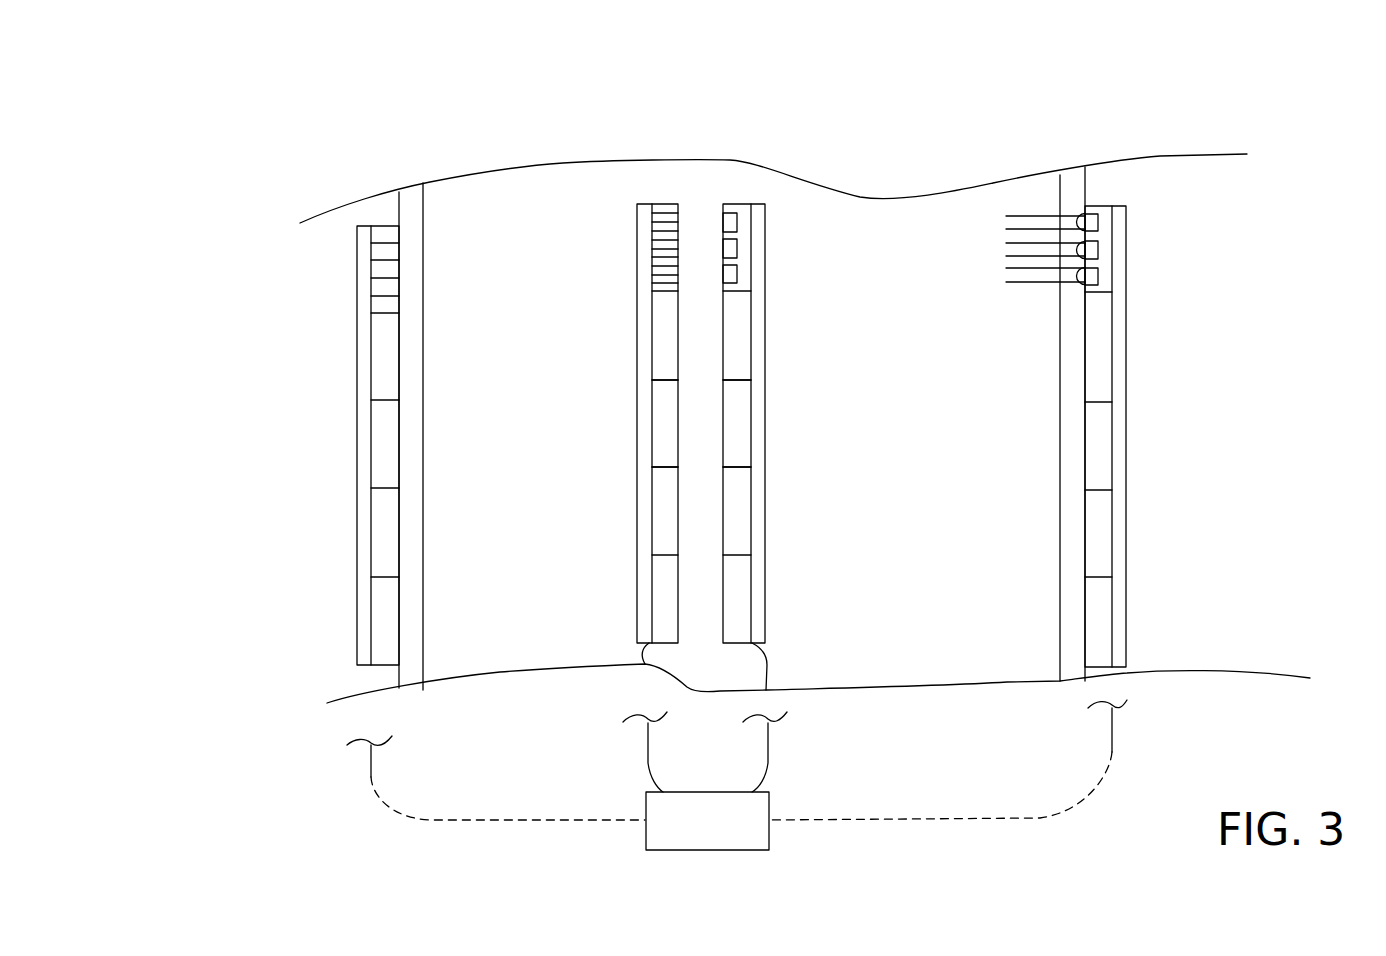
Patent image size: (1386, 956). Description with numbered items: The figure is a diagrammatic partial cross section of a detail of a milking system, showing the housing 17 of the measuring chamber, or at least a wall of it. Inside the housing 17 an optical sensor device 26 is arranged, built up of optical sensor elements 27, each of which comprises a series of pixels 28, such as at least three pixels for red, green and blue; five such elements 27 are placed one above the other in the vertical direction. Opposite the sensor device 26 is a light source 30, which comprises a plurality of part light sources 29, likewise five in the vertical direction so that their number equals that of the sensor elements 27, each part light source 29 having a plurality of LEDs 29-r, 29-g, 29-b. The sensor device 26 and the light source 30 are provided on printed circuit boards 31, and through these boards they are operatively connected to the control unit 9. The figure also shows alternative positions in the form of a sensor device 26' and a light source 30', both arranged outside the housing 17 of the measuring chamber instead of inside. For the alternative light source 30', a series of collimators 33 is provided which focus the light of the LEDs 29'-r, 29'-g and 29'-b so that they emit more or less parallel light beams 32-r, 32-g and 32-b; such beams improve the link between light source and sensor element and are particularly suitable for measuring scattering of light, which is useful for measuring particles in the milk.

The control unit 9 is at (701, 820).
The housing of the measuring chamber 17 is at (408, 218).
The optical sensor device 26 is at (575, 423).
The sensor device 26' is at (288, 445).
The optical sensor elements 27 is at (751, 254).
The pixels 28 is at (663, 213).
The part light sources 29 is at (859, 255).
The red LED 29-r is at (729, 222).
The green LED 29-g is at (729, 249).
The blue LED 29-b is at (729, 275).
The red LED 29'-r is at (1194, 223).
The green LED 29'-g is at (1194, 252).
The blue LED 29'-b is at (1194, 285).
The light source 30 is at (824, 423).
The light source 30' is at (1220, 436).
The printed circuit board 31 is at (645, 472).
The light beam 32-r is at (1050, 222).
The light beam 32-g is at (1050, 249).
The light beam 32-b is at (1050, 274).
The collimators 33 is at (1080, 280).